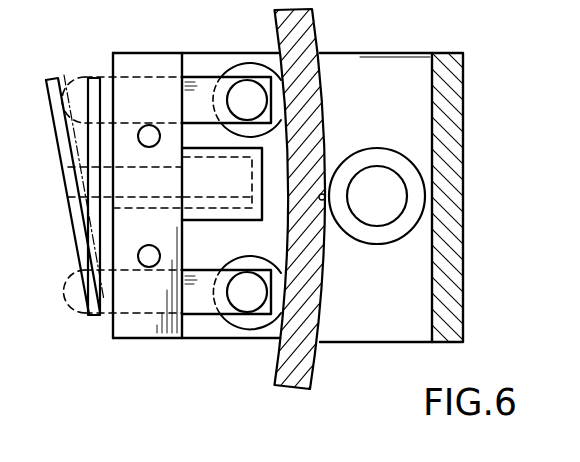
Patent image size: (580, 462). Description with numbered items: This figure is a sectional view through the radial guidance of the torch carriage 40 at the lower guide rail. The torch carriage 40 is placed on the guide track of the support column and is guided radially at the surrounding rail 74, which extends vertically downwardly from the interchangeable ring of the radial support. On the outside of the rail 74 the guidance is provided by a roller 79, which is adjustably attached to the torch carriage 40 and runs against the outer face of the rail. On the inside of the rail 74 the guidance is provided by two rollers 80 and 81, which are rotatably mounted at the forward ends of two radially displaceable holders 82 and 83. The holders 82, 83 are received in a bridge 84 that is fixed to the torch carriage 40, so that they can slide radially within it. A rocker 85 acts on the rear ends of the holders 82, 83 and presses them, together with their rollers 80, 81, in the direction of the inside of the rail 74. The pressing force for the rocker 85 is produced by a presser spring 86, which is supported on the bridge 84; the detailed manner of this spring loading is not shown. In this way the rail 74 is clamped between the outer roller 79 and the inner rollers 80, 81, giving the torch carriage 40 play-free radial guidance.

The torch carriage 40 is at (448, 100).
The surrounding rail 74 is at (300, 356).
The roller 79 is at (412, 185).
The roller 80 is at (253, 72).
The roller 81 is at (238, 318).
The holder 82 is at (205, 87).
The holder 83 is at (198, 302).
The bridge 84 is at (147, 62).
The rocker 85 is at (90, 222).
The presser spring 86 is at (238, 158).